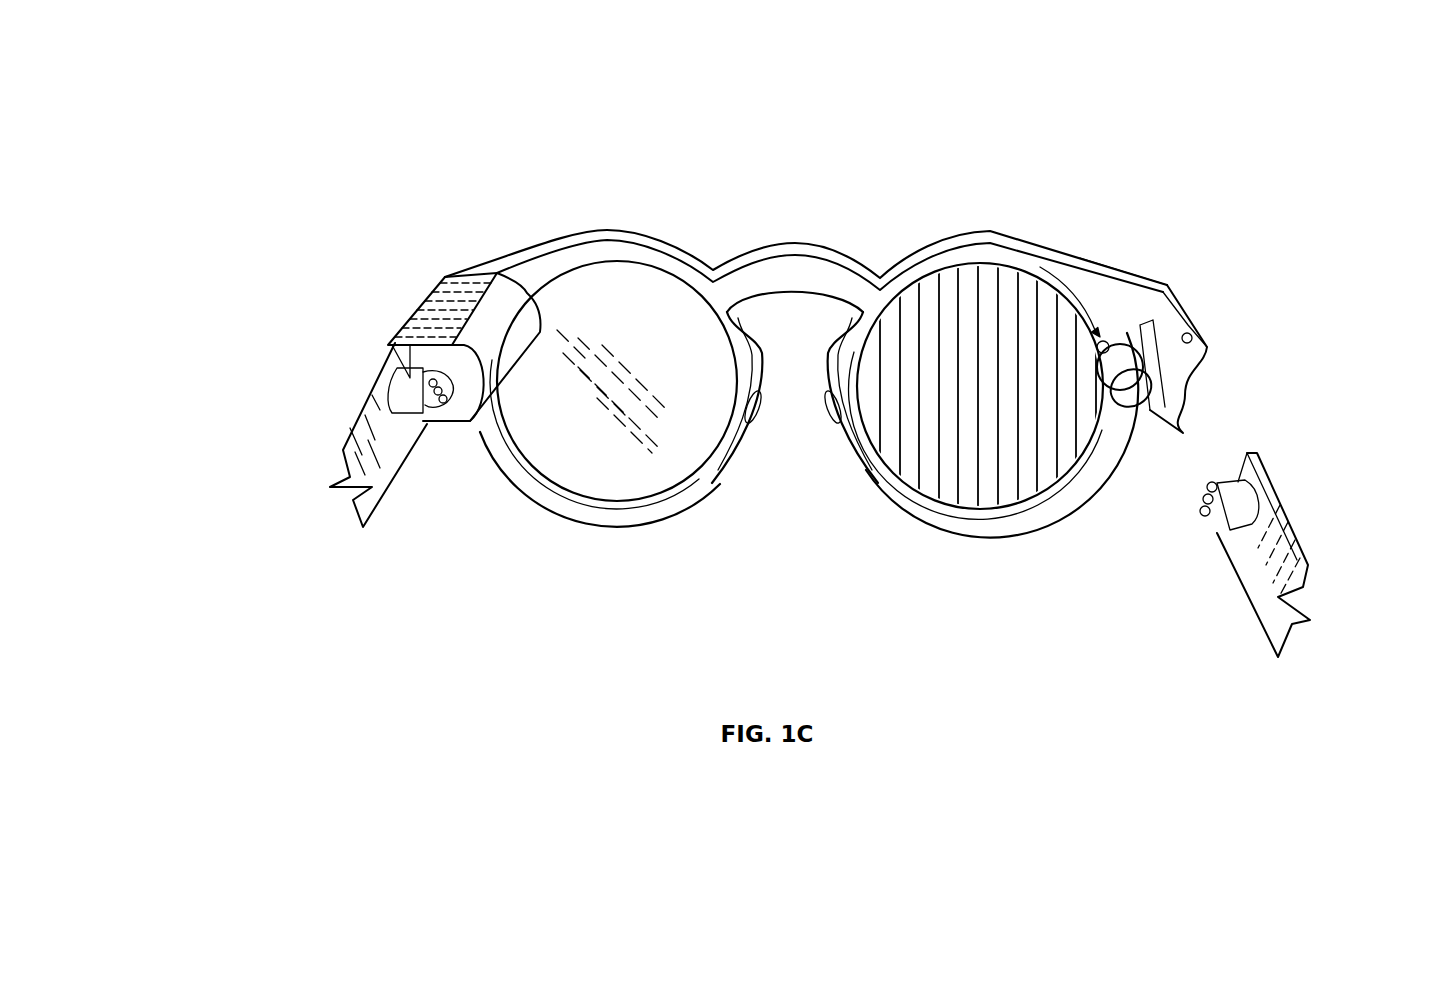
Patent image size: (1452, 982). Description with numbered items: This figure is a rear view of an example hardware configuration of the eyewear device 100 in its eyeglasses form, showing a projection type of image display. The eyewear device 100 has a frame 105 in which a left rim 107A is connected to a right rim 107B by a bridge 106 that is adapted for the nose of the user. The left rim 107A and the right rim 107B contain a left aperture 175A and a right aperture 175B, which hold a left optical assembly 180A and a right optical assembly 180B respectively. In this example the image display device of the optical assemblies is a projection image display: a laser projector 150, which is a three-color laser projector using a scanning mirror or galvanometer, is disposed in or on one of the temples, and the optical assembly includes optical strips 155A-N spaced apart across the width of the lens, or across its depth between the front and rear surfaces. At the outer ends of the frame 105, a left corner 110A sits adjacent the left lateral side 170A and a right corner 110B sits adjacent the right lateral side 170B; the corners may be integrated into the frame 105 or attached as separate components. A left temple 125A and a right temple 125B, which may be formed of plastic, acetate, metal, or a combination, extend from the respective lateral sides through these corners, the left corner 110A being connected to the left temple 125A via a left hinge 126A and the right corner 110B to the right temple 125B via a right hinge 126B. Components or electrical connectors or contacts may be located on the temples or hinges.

The eyewear device 100 is at (291, 108).
The frame 105 is at (958, 240).
The bridge 106 is at (783, 243).
The left rim 107A is at (665, 503).
The right rim 107B is at (1105, 462).
The left corner 110A is at (440, 282).
The right corner 110B is at (1192, 338).
The left temple 125A is at (365, 440).
The right temple 125B is at (1257, 610).
The left hinge 126A is at (410, 377).
The right hinge 126B is at (1238, 497).
The laser projector 150 is at (1130, 350).
The optical strips 155A-N is at (1000, 290).
The left lateral side 170A is at (452, 273).
The right lateral side 170B is at (1093, 253).
The left aperture 175A is at (522, 468).
The right aperture 175B is at (924, 495).
The left optical assembly 180A is at (620, 470).
The right optical assembly 180B is at (990, 490).